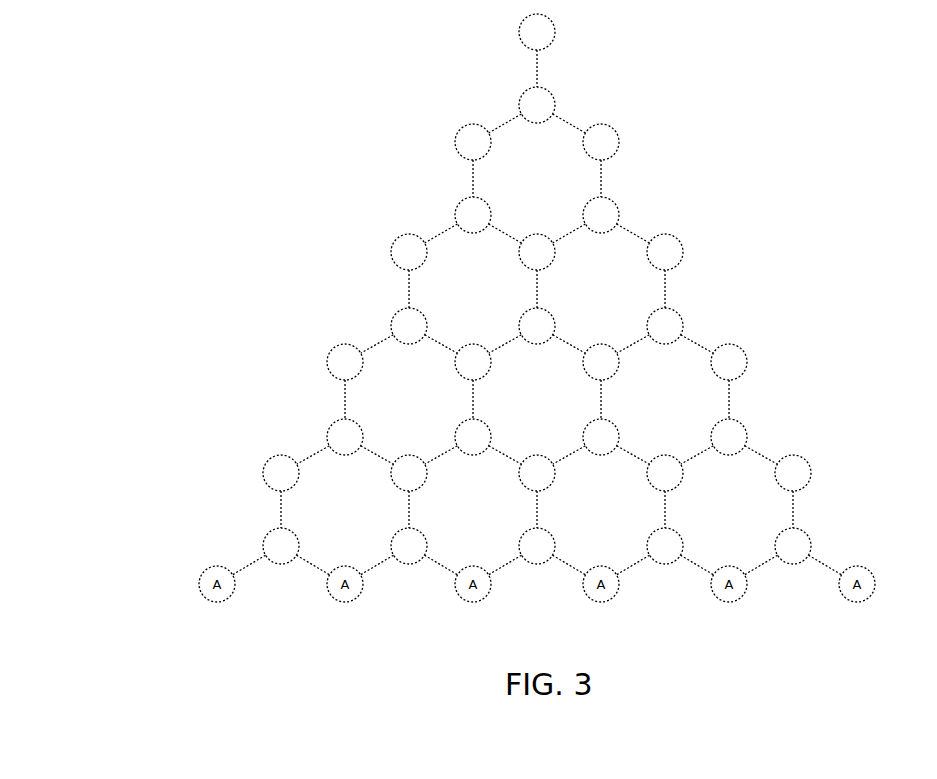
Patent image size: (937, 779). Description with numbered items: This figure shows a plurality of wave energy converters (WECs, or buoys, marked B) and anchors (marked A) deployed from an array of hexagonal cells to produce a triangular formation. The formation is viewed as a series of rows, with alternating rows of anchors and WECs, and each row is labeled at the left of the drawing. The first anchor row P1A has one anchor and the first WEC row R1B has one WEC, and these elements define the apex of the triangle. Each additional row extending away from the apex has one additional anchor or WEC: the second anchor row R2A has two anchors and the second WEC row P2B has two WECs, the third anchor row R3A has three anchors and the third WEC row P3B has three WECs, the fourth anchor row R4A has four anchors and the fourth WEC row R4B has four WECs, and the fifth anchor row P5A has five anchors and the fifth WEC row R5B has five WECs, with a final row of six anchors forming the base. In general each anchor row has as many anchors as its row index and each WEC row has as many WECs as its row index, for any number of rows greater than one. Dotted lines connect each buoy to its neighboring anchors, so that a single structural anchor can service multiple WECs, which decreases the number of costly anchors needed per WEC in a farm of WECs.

The first pixel row of A-type sub-pixels P1A is at (508, 32).
The first row of B-type sub-pixels R1B is at (510, 105).
The second anchor row R2A is at (445, 142).
The second pixel row of B-type sub-pixels P2B is at (445, 215).
The third anchor row R3A is at (385, 252).
The third pixel row of B-type sub-pixels P3B is at (385, 326).
The fourth row of A-type sub-pixels R4A is at (320, 362).
The fourth row of B-type sub-pixels R4B is at (320, 437).
The fifth pixel row of A-type sub-pixels P5A is at (255, 473).
The fifth row of B-type sub-pixels R5B is at (253, 546).